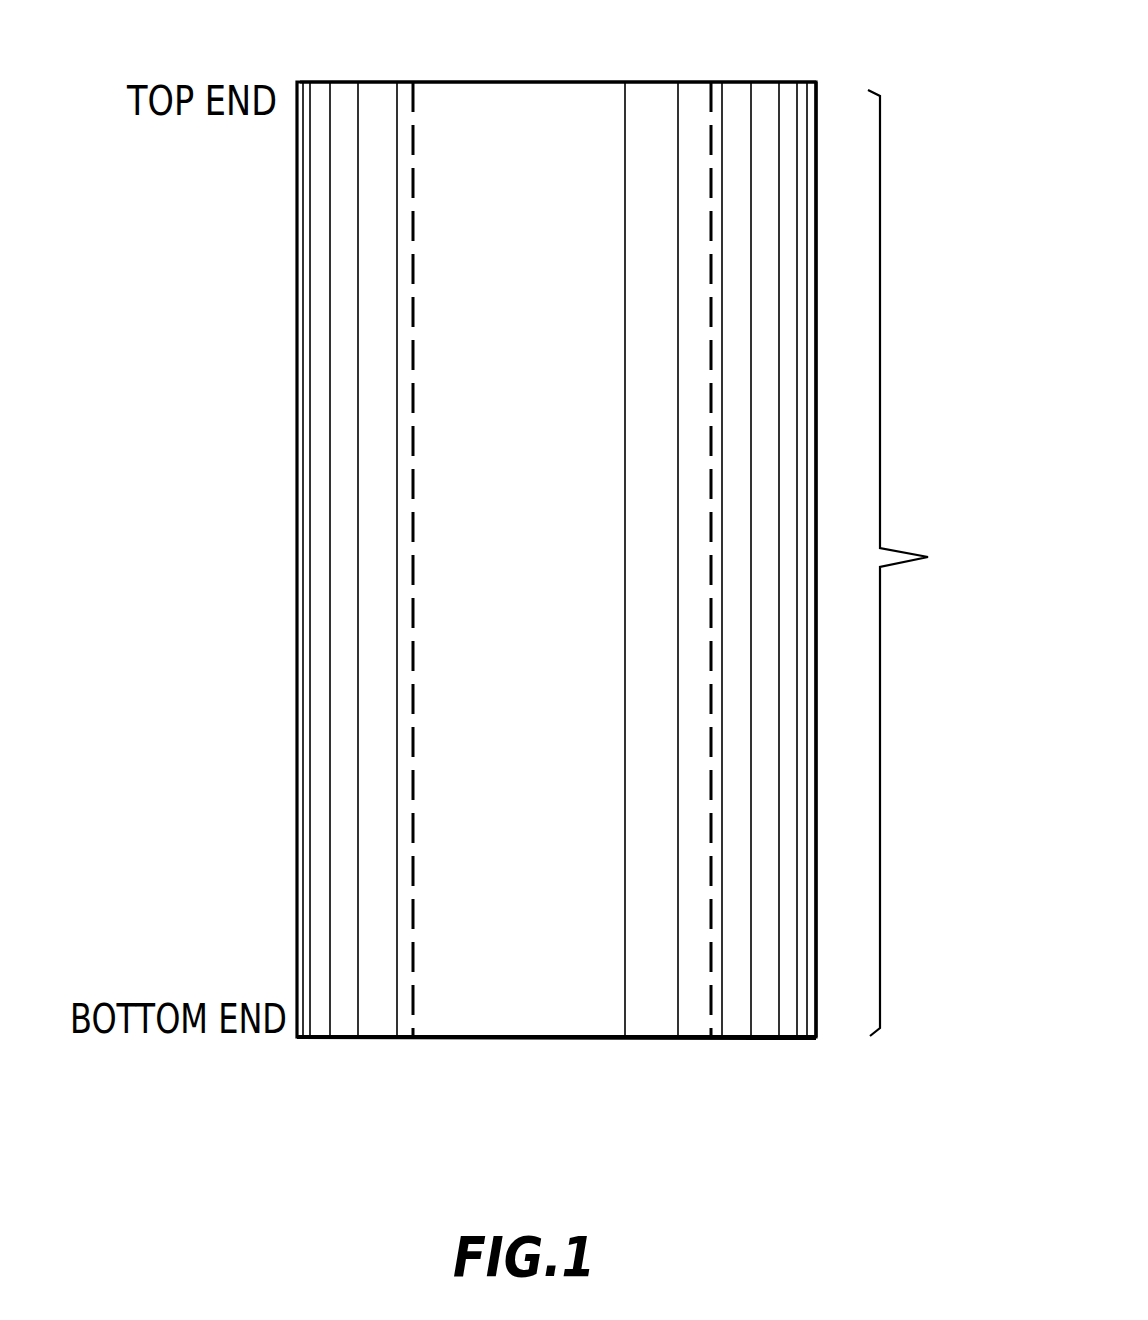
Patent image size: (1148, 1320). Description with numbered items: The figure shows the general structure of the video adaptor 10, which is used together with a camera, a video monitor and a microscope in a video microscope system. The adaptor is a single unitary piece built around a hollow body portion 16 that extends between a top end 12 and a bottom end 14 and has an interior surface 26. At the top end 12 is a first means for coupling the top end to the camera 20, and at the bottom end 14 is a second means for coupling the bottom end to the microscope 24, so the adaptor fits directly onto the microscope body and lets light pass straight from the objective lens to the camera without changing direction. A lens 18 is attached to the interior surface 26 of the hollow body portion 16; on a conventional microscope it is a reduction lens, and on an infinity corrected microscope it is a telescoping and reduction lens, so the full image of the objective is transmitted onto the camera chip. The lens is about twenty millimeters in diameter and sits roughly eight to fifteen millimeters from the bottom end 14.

The video adaptor 10 is at (139, 420).
The top end 12 is at (790, 82).
The bottom end 14 is at (783, 1043).
The hollow body portion 16 is at (817, 163).
The lens 18 is at (412, 829).
The first means for coupling the top end to the camera 20 is at (557, 82).
The second means for coupling the bottom end to the microscope 24 is at (538, 1040).
The interior surface 26 is at (710, 403).